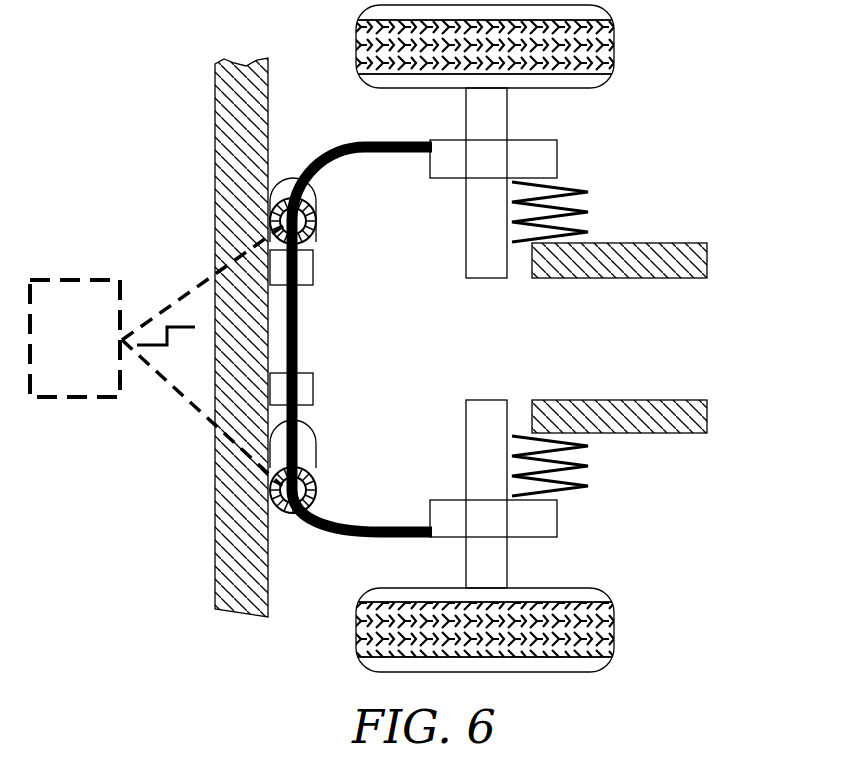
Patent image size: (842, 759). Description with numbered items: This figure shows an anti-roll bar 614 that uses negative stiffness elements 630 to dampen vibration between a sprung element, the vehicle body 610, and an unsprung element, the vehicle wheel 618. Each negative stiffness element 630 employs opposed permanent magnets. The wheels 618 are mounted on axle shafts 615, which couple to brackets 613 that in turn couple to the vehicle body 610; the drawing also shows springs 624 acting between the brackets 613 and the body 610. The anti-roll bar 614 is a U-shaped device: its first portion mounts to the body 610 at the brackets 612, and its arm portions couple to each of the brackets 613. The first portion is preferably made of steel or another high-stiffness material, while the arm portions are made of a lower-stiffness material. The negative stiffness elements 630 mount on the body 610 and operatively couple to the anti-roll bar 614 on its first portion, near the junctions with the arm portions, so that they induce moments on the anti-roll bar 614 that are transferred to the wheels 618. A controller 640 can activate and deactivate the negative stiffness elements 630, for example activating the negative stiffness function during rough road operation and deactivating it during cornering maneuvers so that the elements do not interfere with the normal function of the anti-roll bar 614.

The vehicle body 610 is at (232, 143).
The brackets 612 is at (312, 390).
The brackets 613 is at (557, 158).
The anti-roll bar 614 is at (334, 160).
The axle shafts 615 is at (500, 413).
The vehicle wheel 618 is at (614, 50).
The spring 624 is at (583, 210).
The negative stiffness element 630 is at (280, 187).
The controller 640 is at (94, 354).